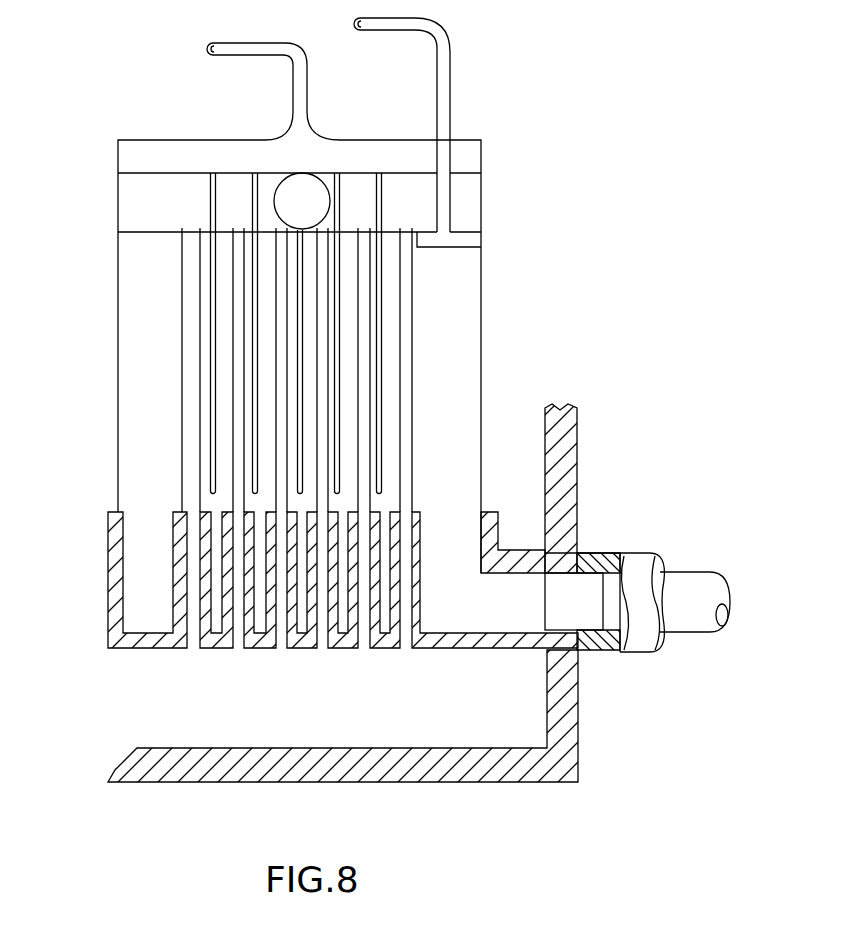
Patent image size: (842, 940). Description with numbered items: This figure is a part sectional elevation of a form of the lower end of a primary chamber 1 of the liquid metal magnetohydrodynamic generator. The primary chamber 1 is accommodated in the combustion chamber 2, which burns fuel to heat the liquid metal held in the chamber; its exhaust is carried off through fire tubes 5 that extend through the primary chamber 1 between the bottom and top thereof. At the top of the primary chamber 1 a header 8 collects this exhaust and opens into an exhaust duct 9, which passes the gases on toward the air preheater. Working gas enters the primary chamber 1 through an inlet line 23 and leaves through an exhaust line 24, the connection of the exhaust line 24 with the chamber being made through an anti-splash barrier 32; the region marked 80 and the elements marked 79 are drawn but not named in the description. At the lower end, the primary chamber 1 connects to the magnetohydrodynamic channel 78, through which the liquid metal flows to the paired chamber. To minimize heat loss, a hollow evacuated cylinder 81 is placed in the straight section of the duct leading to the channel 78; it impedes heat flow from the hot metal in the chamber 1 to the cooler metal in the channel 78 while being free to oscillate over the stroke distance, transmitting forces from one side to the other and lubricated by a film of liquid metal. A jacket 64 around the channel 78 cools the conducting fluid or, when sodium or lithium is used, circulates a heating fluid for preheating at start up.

The primary chamber 1 is at (118, 405).
The combustion chamber 2 is at (342, 718).
The fire tube 5 is at (182, 332).
The header 8 is at (415, 212).
The exhaust duct 9 is at (312, 214).
The inlet line 23 is at (308, 80).
The exhaust line 24 is at (450, 73).
The anti-splash barrier 32 is at (458, 240).
The cooling jacket 64 is at (627, 652).
The magnetohydrodynamic channel 78 is at (707, 612).
The electrodes 79 is at (208, 205).
The header chamber 80 is at (318, 168).
The hollow evacuated cylinder 81 is at (592, 618).